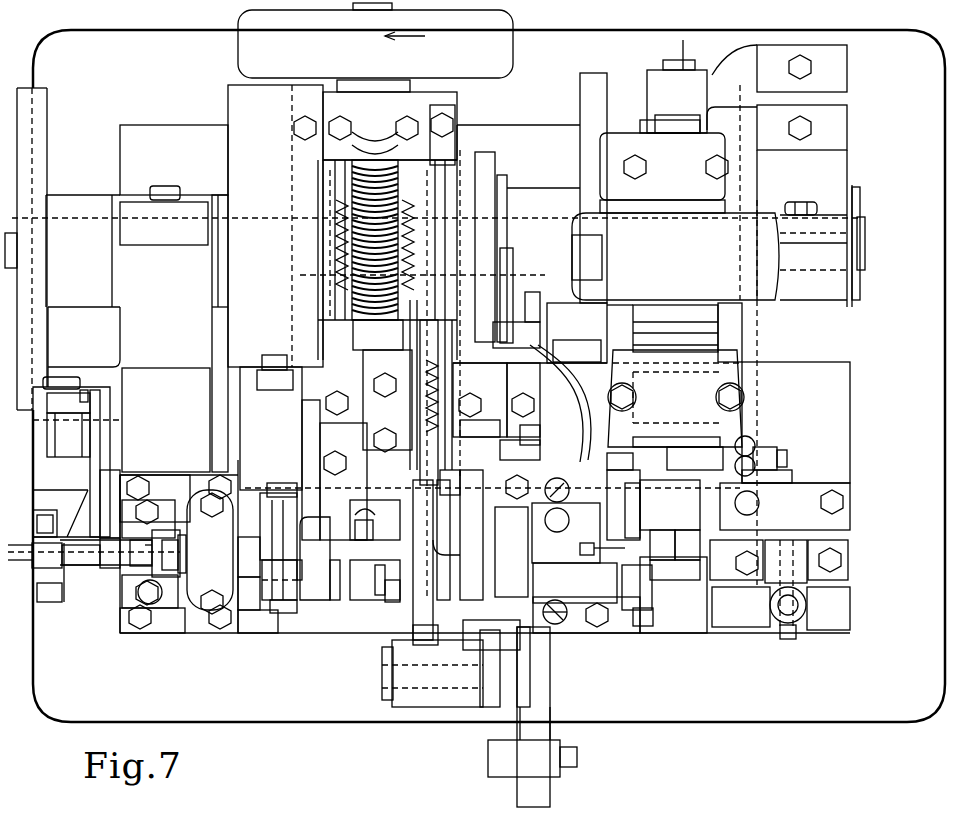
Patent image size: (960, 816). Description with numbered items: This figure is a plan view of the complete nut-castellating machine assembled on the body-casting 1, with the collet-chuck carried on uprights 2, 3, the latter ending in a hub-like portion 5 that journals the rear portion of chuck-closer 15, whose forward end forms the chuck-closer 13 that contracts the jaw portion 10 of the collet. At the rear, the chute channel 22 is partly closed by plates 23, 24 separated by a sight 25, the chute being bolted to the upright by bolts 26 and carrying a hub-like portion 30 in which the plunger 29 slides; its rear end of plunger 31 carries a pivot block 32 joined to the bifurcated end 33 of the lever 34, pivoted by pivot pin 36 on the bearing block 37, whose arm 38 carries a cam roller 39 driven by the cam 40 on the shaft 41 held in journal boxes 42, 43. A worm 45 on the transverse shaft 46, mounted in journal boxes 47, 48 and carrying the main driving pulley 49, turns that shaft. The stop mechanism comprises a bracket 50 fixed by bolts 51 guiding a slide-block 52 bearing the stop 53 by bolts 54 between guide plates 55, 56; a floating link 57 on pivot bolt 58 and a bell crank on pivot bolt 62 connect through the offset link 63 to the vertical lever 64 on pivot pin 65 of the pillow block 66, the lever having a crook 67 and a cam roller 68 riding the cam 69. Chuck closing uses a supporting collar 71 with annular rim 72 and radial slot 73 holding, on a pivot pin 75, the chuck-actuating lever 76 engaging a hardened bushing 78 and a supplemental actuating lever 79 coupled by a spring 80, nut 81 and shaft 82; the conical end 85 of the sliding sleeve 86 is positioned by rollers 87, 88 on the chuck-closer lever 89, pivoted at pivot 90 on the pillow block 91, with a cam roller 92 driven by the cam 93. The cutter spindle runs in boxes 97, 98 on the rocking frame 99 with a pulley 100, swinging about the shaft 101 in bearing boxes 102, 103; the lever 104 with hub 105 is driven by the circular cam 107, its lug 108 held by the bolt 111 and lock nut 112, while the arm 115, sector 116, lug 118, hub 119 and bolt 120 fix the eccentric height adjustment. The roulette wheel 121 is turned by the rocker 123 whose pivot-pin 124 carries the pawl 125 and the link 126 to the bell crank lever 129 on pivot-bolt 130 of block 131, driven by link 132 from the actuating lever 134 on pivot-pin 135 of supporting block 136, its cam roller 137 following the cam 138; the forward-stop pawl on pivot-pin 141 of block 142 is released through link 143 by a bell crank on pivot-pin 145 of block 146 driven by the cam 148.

The body-casting 1 is at (489, 376).
The upright 2 is at (357, 585).
The upright 3 is at (155, 498).
The hub-like portion 5 is at (210, 552).
The jaw portion 10 is at (752, 450).
The chuck-closer 13 is at (608, 616).
The rear portion of chuck-closer 15 is at (249, 557).
The channel 22 is at (156, 592).
The plate 23 is at (191, 555).
The plate 24 is at (178, 537).
The sight 25 is at (183, 555).
The bolts 26 is at (151, 566).
The plunger 29 is at (109, 566).
The hub-like portion 30 is at (118, 530).
The rear end of plunger 31 is at (316, 563).
The pivot block 32 is at (35, 555).
The bifurcated end 33 is at (37, 591).
The lever 34 is at (70, 576).
The pivot pin 36 is at (68, 434).
The bearing block 37 is at (71, 462).
The arm 38 is at (61, 375).
The cam roller 39 is at (82, 396).
The cam 40 is at (42, 388).
The shaft 41 is at (868, 246).
The journal box 42 is at (165, 251).
The journal box 43 is at (813, 250).
The worm 45 is at (345, 214).
The transverse shaft 46 is at (373, 78).
The journal box 47 is at (319, 470).
The journal box 48 is at (390, 126).
The main driving pulley 49 is at (375, 40).
The bracket 50 is at (586, 568).
The bolts 51 is at (576, 523).
The slide-block 52 is at (637, 587).
The stop 53 is at (664, 545).
The bolts 54 is at (675, 568).
The guide plate 55 is at (676, 448).
The guide plate 56 is at (653, 614).
The floating link 57 is at (633, 510).
The pivot bolt 58 is at (688, 545).
The pivot bolt 62 is at (530, 435).
The offset link 63 is at (523, 400).
The vertical lever 64 is at (516, 327).
The pivot pin 65 is at (670, 505).
The pillow block 66 is at (623, 496).
The crook 67 is at (513, 259).
The cam roller 68 is at (480, 400).
The cam 69 is at (487, 154).
The supporting collar 71 is at (379, 582).
The annular rim 72 is at (341, 467).
The radial slot 73 is at (374, 580).
The pivot pin 75 is at (375, 520).
The chuck-actuating lever 76 is at (419, 560).
The hardened bushing 78 is at (303, 577).
The supplemental actuating lever 79 is at (310, 570).
The spring 80 is at (288, 546).
The nut 81 is at (368, 526).
The shaft 82 is at (397, 595).
The conical end 85 is at (315, 564).
The sliding sleeve 86 is at (249, 593).
The roller 87 is at (284, 615).
The roller 88 is at (282, 483).
The chuck-closer lever 89 is at (258, 621).
The pivot 90 is at (275, 370).
The pillow block 91 is at (343, 465).
The cam roller 92 is at (261, 428).
The cam 93 is at (275, 226).
The box 97 is at (676, 398).
The box 98 is at (664, 166).
The rocking frame 99 is at (598, 249).
The pulley 100 is at (675, 256).
The shaft 101 is at (677, 84).
The bearing box 102 is at (708, 95).
The bearing box 103 is at (784, 506).
The lever 104 is at (736, 560).
The hub 105 is at (768, 478).
The circular cam 107 is at (648, 85).
The lug 108 is at (678, 421).
The bolt 111 is at (778, 460).
The lock nut 112 is at (786, 450).
The arm 115 is at (707, 635).
The sector 116 is at (741, 607).
The lug 118 is at (828, 608).
The hub 119 is at (786, 585).
The bolt 120 is at (790, 640).
The roulette wheel 121 is at (440, 620).
The rocker 123 is at (477, 635).
The pivot-pin 124 is at (477, 497).
The pawl 125 is at (441, 478).
The link 126 is at (490, 574).
The bell crank lever 129 is at (490, 675).
The pivot-bolt 130 is at (384, 675).
The block 131 is at (432, 673).
The link 132 is at (550, 703).
The actuating lever 134 is at (550, 399).
The pivot-pin 135 is at (577, 333).
The supporting block 136 is at (536, 300).
The cam roller 137 is at (560, 403).
The cam 138 is at (588, 113).
The pivot-pin 141 is at (480, 430).
The block 142 is at (460, 478).
The link 143 is at (422, 465).
The pivot-pin 145 is at (378, 335).
The block 146 is at (387, 401).
The cam 148 is at (440, 113).